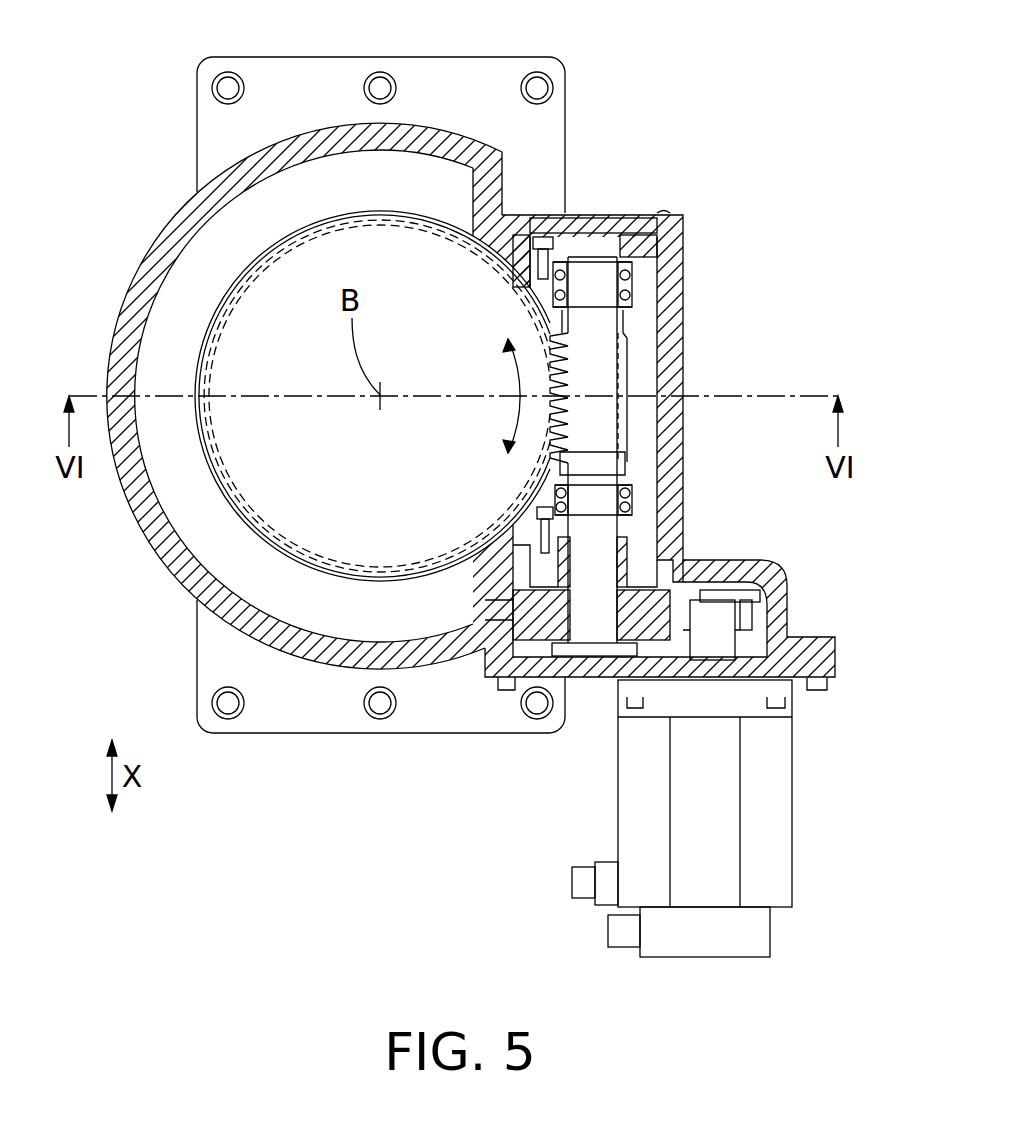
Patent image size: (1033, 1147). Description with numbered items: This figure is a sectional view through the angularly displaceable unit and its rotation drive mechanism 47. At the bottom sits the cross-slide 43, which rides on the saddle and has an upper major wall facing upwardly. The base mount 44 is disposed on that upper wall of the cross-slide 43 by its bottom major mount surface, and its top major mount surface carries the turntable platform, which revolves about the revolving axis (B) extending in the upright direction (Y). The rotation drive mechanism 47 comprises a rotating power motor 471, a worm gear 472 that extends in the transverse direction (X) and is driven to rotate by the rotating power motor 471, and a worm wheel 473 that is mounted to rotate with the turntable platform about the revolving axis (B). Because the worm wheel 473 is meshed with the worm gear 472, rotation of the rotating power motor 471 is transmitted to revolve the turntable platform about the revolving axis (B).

The cross-slide 43 is at (273, 715).
The base mount 44 is at (170, 248).
The rotation drive mechanism 47 is at (640, 350).
The rotating power motor 471 is at (745, 790).
The worm gear 472 is at (605, 380).
The worm wheel 473 is at (473, 288).